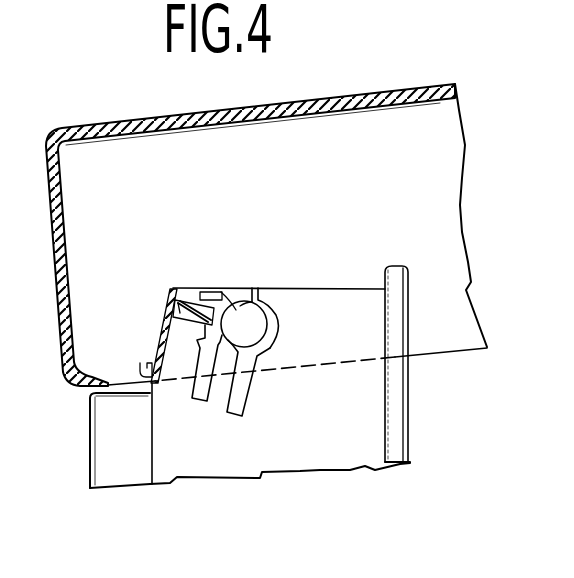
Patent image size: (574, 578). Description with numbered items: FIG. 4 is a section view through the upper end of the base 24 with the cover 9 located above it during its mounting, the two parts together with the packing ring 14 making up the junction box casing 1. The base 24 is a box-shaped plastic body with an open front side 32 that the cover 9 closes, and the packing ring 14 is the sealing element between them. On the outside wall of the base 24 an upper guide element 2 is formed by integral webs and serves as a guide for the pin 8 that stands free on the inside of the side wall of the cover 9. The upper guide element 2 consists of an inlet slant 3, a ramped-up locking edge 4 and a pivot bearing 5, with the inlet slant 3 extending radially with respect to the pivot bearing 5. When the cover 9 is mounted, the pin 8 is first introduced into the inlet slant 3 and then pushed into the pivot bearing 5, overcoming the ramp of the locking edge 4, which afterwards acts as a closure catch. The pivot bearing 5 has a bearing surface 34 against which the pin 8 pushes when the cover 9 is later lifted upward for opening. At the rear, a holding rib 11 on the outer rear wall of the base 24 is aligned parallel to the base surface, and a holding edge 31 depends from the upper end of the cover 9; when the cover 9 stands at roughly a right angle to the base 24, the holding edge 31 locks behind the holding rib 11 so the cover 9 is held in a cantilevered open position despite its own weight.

The junction box casing 1 is at (221, 104).
The upper guide element 2 is at (245, 338).
The inlet slant 3 is at (214, 300).
The locking edge 4 is at (238, 306).
The pivot bearing 5 is at (242, 330).
The pin 8 is at (176, 308).
The cover 9 is at (462, 148).
The holding rib 11 is at (146, 371).
The packing ring 14 is at (408, 392).
The base 24 is at (365, 436).
The holding edge 31 is at (100, 382).
The open front side 32 is at (152, 116).
The bearing surface 34 is at (258, 292).